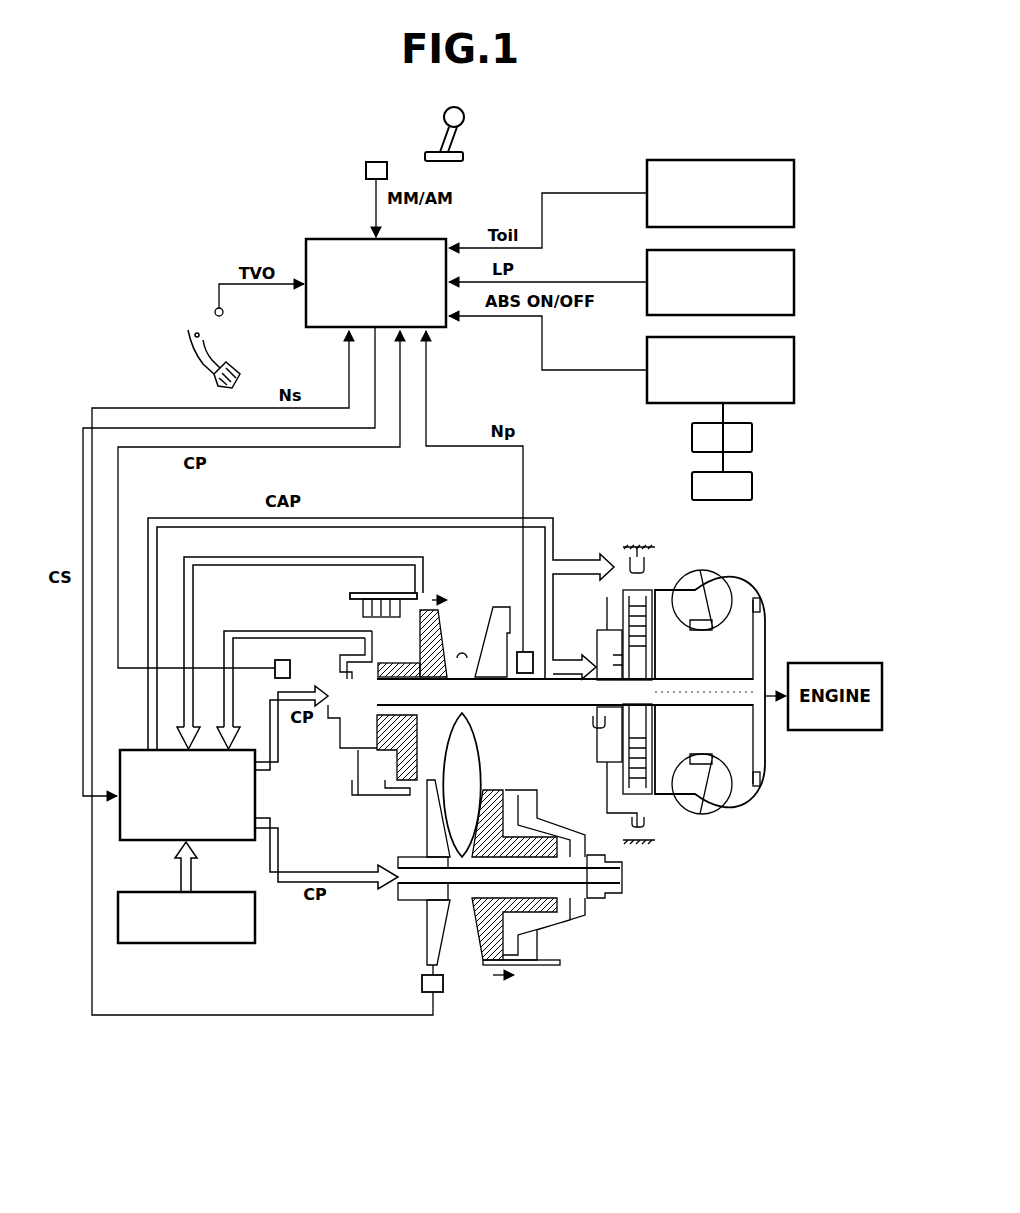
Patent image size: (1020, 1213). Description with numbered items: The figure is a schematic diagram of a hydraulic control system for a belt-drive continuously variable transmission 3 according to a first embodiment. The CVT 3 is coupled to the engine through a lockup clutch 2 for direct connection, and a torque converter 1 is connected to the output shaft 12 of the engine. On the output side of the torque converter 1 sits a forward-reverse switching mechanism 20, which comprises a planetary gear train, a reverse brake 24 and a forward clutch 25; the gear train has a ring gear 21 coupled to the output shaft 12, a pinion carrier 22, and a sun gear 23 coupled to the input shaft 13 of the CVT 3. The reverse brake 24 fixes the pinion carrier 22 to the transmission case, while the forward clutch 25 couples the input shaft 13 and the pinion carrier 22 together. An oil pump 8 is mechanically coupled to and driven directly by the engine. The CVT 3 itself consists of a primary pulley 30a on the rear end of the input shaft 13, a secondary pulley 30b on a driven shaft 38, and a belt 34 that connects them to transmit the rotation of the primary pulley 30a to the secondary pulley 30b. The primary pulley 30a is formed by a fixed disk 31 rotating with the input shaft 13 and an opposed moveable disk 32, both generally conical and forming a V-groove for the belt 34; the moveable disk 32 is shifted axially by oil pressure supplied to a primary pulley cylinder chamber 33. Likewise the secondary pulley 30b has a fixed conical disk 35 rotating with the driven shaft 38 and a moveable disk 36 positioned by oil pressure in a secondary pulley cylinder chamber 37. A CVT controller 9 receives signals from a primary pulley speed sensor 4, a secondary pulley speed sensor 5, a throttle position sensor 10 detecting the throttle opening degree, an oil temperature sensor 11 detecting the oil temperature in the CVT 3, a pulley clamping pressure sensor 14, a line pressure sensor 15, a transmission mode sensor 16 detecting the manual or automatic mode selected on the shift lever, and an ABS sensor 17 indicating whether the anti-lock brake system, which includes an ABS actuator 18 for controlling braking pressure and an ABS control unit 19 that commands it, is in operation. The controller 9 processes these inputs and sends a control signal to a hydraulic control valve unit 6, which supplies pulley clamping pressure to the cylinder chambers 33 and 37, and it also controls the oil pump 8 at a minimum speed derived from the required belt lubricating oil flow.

The torque converter 1 is at (727, 563).
The lockup clutch 2 is at (755, 757).
The belt-drive continuously variable transmission 3 is at (489, 997).
The primary pulley speed sensor 4 is at (528, 650).
The secondary pulley speed sensor 5 is at (437, 993).
The hydraulic control valve unit 6 is at (150, 842).
The oil pump 8 is at (212, 945).
The CVT controller 9 is at (337, 239).
The throttle position sensor 10 is at (215, 308).
The oil temperature sensor 11 is at (794, 205).
The output shaft of the engine 12 is at (668, 706).
The input shaft of the CVT 13 is at (547, 699).
The pulley clamping pressure sensor 14 is at (276, 678).
The line pressure sensor 15 is at (794, 292).
The transmission mode sensor 16 is at (366, 168).
The ABS sensor 17 is at (794, 378).
The ABS actuator 18 is at (752, 437).
The ABS control unit 19 is at (752, 487).
The forward-reverse switching mechanism 20 is at (675, 834).
The ring gear 21 is at (640, 594).
The pinion carrier 22 is at (595, 628).
The sun gear 23 is at (640, 662).
The reverse brake 24 is at (630, 568).
The forward clutch 25 is at (592, 732).
The primary pulley 30a is at (348, 755).
The secondary pulley 30b is at (410, 917).
The fixed disk 31 is at (500, 607).
The moveable disk 32 is at (447, 637).
The primary pulley cylinder chamber 33 is at (400, 637).
The belt 34 is at (470, 777).
The fixed conical disk 35 is at (437, 837).
The moveable disk 36 is at (547, 965).
The secondary pulley cylinder chamber 37 is at (568, 912).
The driven shaft 38 is at (618, 879).